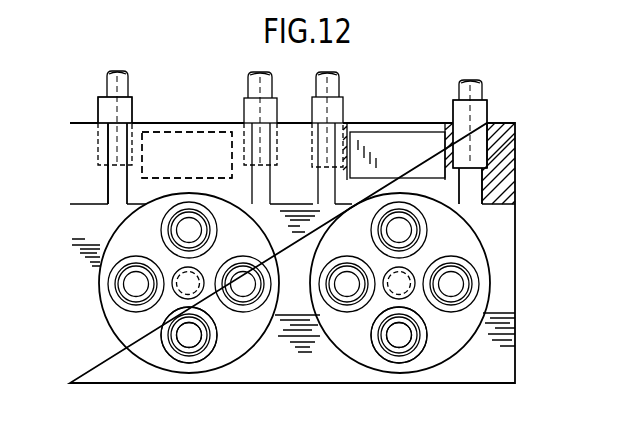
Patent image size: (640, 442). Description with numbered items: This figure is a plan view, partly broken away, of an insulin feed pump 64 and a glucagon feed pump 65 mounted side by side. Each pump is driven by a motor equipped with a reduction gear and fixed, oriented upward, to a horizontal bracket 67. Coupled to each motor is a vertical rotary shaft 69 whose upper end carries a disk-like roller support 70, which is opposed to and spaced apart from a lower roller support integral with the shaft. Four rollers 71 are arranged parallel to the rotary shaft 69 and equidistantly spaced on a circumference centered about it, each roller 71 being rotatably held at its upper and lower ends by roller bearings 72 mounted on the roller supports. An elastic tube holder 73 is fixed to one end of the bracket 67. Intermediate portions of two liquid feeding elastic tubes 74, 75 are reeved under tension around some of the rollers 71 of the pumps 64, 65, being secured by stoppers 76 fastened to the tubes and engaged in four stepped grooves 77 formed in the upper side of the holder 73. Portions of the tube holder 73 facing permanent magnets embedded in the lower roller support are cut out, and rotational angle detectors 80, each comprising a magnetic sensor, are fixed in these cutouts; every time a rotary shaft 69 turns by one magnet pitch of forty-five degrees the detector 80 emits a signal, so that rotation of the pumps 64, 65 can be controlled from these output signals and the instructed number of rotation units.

The insulin feed pump 64 is at (98, 308).
The glucagon feed pump 65 is at (491, 305).
The horizontal bracket 67 is at (290, 373).
The vertical rotary shaft 69 is at (202, 293).
The disk-like roller support 70 is at (143, 347).
The roller 71 is at (190, 341).
The roller bearing 72 is at (210, 354).
The elastic tube holder 73 is at (163, 130).
The liquid feeding elastic tube 74 is at (107, 85).
The liquid feeding elastic tube 75 is at (480, 85).
The stopper 76 is at (100, 110).
The stepped groove 77 is at (114, 171).
The rotational angle detector 80 is at (195, 132).